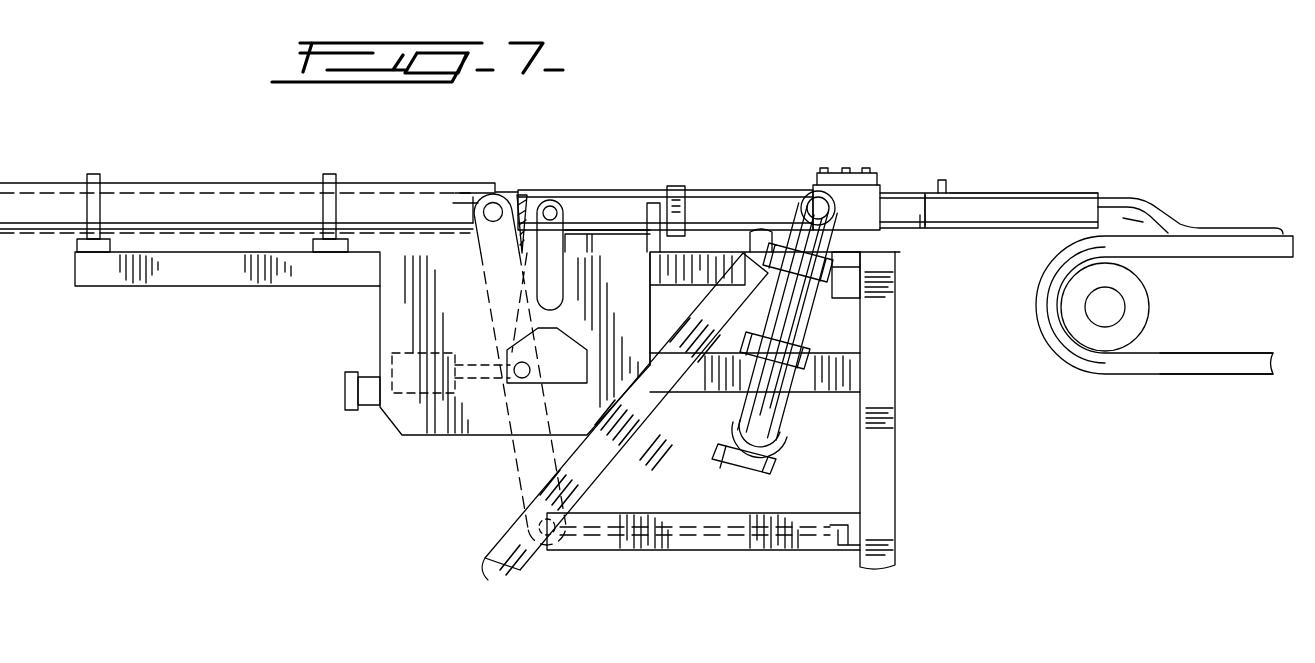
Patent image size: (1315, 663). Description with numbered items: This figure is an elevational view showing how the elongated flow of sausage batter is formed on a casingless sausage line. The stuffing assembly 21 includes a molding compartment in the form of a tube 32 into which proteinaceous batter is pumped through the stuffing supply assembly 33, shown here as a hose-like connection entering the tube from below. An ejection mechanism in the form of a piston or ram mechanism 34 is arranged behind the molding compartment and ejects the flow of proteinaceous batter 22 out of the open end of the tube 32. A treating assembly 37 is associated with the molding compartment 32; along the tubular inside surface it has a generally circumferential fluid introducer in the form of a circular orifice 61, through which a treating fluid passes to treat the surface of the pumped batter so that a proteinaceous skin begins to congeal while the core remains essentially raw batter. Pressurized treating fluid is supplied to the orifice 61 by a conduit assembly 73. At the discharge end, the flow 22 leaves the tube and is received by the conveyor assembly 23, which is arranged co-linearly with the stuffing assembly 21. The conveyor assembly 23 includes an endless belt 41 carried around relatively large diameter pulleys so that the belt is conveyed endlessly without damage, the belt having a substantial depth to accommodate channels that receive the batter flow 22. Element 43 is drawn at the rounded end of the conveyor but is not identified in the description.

The stuffing assembly 21 is at (432, 449).
The elongated flow of proteinaceous batter 22 is at (1180, 226).
The conveyor assembly 23 is at (1165, 385).
The tube 32 is at (912, 188).
The stuffing supply assembly 33 is at (776, 388).
The piston or ram mechanism 34 is at (642, 197).
The treating assembly 37 is at (991, 180).
The endless belt 41 is at (1231, 326).
The roller 43 is at (1152, 291).
The circular orifice 61 is at (926, 218).
The conduit assembly 73 is at (947, 178).